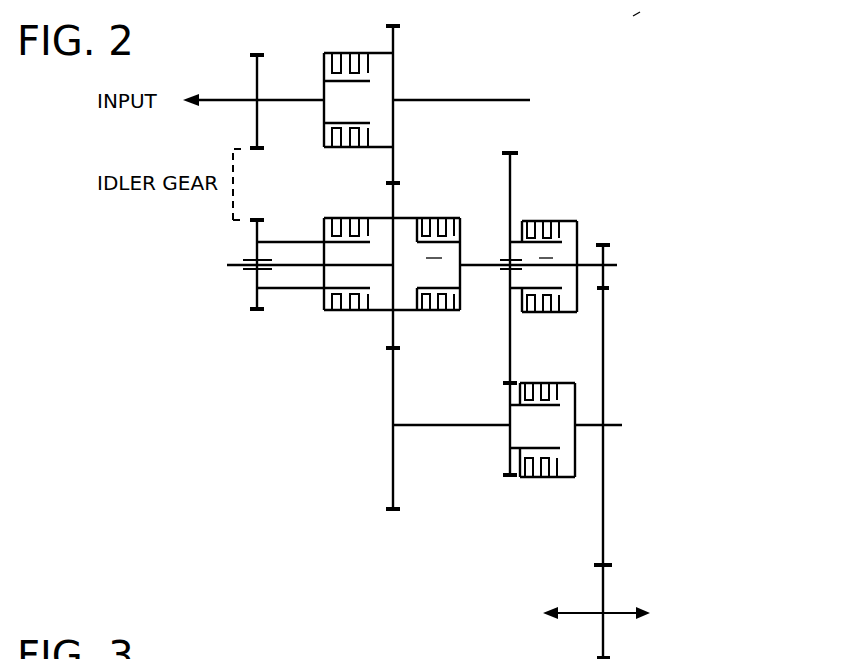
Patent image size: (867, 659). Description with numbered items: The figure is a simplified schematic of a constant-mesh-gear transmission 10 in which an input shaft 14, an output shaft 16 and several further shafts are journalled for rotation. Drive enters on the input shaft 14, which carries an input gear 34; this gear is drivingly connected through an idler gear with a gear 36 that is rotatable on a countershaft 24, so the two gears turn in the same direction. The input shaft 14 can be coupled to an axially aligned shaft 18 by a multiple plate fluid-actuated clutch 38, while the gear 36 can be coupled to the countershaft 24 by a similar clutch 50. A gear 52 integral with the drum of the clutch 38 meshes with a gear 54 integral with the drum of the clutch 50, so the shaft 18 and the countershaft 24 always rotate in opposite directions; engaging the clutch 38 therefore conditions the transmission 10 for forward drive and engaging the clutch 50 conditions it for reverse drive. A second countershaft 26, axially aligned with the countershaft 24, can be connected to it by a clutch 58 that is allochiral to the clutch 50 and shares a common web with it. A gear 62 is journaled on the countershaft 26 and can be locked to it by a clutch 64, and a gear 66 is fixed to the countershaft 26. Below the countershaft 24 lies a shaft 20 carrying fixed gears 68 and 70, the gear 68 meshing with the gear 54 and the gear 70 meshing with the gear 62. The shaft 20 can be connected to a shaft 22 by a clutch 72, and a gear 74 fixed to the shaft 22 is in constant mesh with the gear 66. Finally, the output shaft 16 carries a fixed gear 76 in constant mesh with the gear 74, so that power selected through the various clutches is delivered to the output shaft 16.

The transmission 10 is at (313, 355).
The input shaft 14 is at (287, 103).
The output shaft 16 is at (616, 616).
The shaft 18 is at (483, 100).
The shaft 20 is at (443, 427).
The shaft 22 is at (588, 427).
The countershaft 24 is at (290, 268).
The countershaft 26 is at (480, 270).
The input gear 34 is at (255, 65).
The gear 36 is at (257, 236).
The clutch 38 is at (348, 53).
The clutch 50 is at (340, 217).
The gear 52 is at (394, 43).
The gear 54 is at (394, 205).
The clutch 58 is at (438, 220).
The gear 62 is at (512, 180).
The clutch 64 is at (548, 221).
The gear 66 is at (604, 256).
The gear 68 is at (393, 370).
The gear 70 is at (510, 393).
The clutch 72 is at (540, 383).
The gear 74 is at (603, 328).
The gear 76 is at (603, 587).